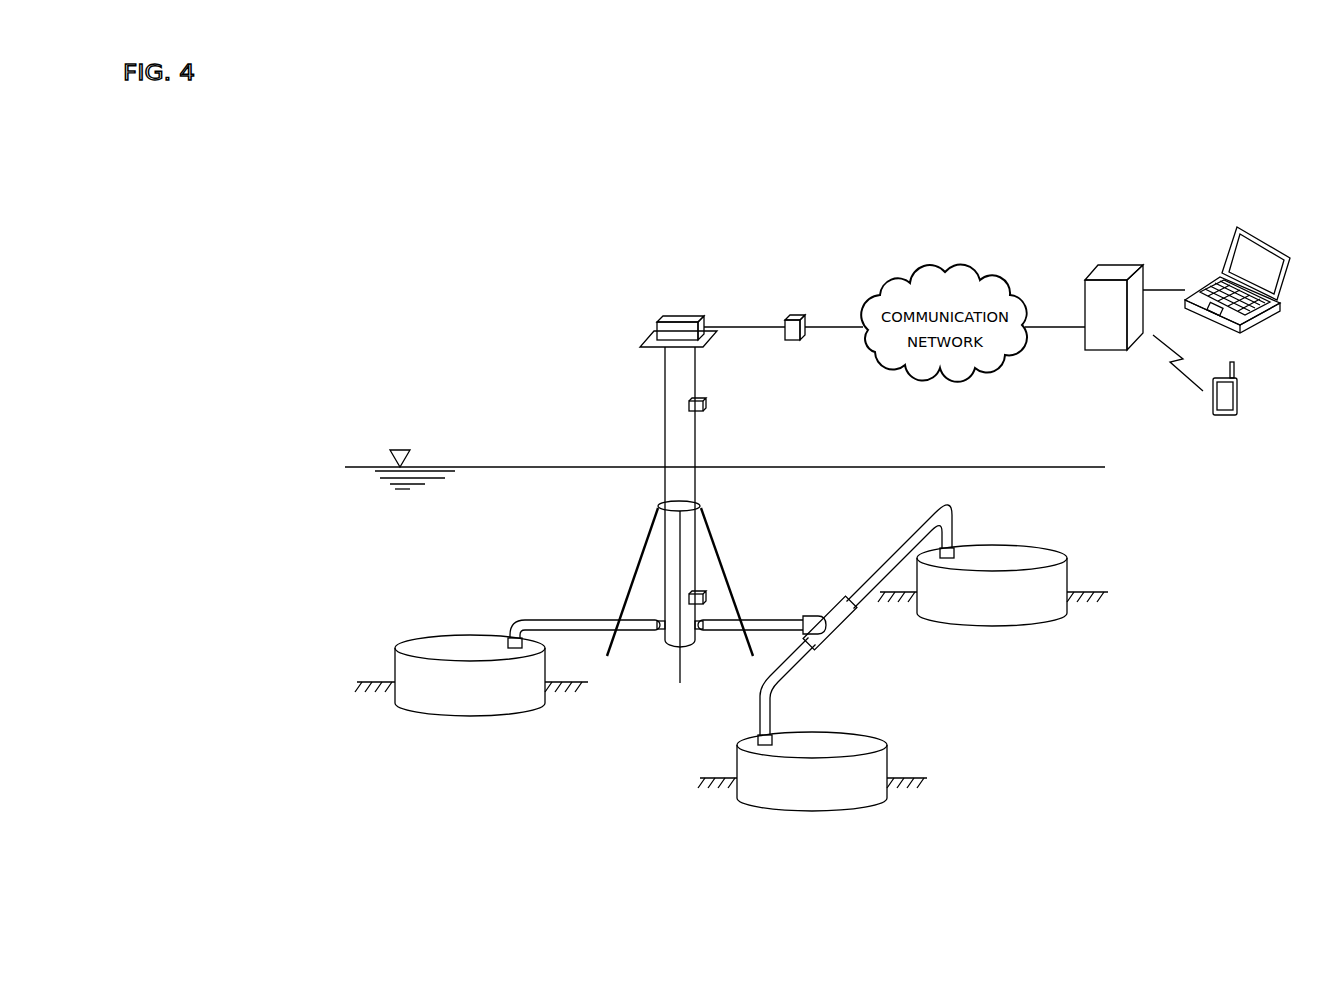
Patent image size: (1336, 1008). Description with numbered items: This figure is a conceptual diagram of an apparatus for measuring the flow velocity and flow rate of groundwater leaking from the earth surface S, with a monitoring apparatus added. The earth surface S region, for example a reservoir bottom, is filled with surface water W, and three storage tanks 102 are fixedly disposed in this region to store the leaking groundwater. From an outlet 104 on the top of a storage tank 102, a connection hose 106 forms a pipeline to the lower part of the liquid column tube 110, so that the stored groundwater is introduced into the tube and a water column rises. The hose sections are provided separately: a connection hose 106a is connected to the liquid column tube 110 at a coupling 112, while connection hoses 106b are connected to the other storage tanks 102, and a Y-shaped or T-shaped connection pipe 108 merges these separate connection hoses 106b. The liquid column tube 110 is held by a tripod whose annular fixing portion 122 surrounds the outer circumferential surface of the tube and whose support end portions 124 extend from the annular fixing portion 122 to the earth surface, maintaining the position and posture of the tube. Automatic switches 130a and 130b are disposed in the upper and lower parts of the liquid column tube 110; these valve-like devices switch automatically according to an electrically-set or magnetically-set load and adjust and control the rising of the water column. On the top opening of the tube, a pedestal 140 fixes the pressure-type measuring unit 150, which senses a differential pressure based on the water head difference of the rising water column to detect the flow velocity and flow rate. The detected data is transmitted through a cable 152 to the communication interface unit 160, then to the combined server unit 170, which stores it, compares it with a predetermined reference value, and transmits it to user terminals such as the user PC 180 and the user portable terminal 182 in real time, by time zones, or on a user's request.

The storage tank 102 is at (438, 690).
The outlet 104 is at (517, 648).
The connection hose 106 is at (573, 620).
The connection hose connected to the liquid column tube 106a is at (727, 630).
The connection hoses connected to the storage tanks 106b is at (893, 560).
The Y-shaped or T-shaped connection pipe 108 is at (806, 620).
The liquid column tube 110 is at (660, 420).
The pipe connector 112 is at (662, 629).
The annular fixing portion 122 is at (700, 503).
The support end portions 124 is at (713, 532).
The automatic switch 130a is at (708, 406).
The automatic switch 130b is at (708, 595).
The pedestal 140 is at (652, 345).
The pressure-type measuring unit 150 is at (672, 312).
The cable 152 is at (745, 318).
The communication interface unit 160 is at (800, 312).
The combined server unit 170 is at (1108, 272).
The user PC 180 is at (1220, 240).
The user portable terminal 182 is at (1208, 408).
The earth surface S is at (378, 680).
The surface water W is at (474, 467).